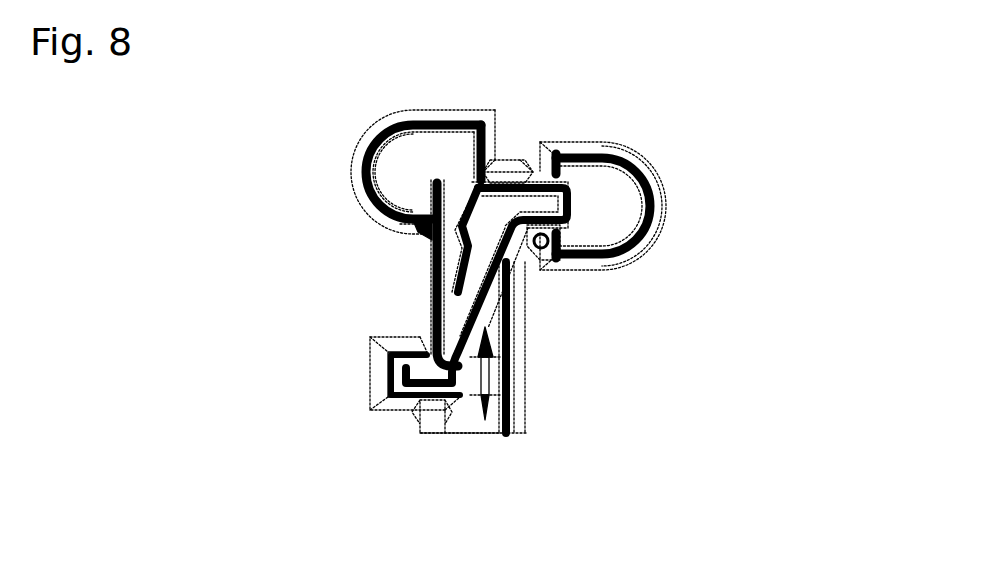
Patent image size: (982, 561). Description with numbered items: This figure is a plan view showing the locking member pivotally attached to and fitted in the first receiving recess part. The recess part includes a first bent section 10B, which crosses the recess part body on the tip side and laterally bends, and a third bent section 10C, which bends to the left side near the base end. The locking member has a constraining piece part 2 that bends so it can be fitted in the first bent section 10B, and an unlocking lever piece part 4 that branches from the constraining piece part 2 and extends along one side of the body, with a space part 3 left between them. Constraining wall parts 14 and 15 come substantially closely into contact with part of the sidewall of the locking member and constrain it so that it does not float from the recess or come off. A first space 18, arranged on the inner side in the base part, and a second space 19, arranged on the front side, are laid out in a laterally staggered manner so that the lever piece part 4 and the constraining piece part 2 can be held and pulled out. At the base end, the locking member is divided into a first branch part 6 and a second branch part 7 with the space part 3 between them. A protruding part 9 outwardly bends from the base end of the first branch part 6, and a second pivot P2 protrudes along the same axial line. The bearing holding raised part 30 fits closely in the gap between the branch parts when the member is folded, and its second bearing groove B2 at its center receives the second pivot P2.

The first bent section 10B is at (446, 140).
The first space 18 is at (385, 168).
The second space 19 is at (618, 204).
The constraining piece part 2 is at (618, 234).
The unlocking lever piece part 4 is at (438, 186).
The space part 3 is at (416, 222).
The constraining wall part 14 is at (542, 177).
The constraining wall part 15 is at (528, 270).
The first branch part 6 is at (424, 348).
The third bent section 10C is at (395, 378).
The protruding part 9 is at (401, 412).
The second branch part 7 is at (512, 358).
The second bearing groove B2 is at (500, 414).
The second pivot P2 is at (460, 432).
The bearing holding raised part 30 is at (488, 426).